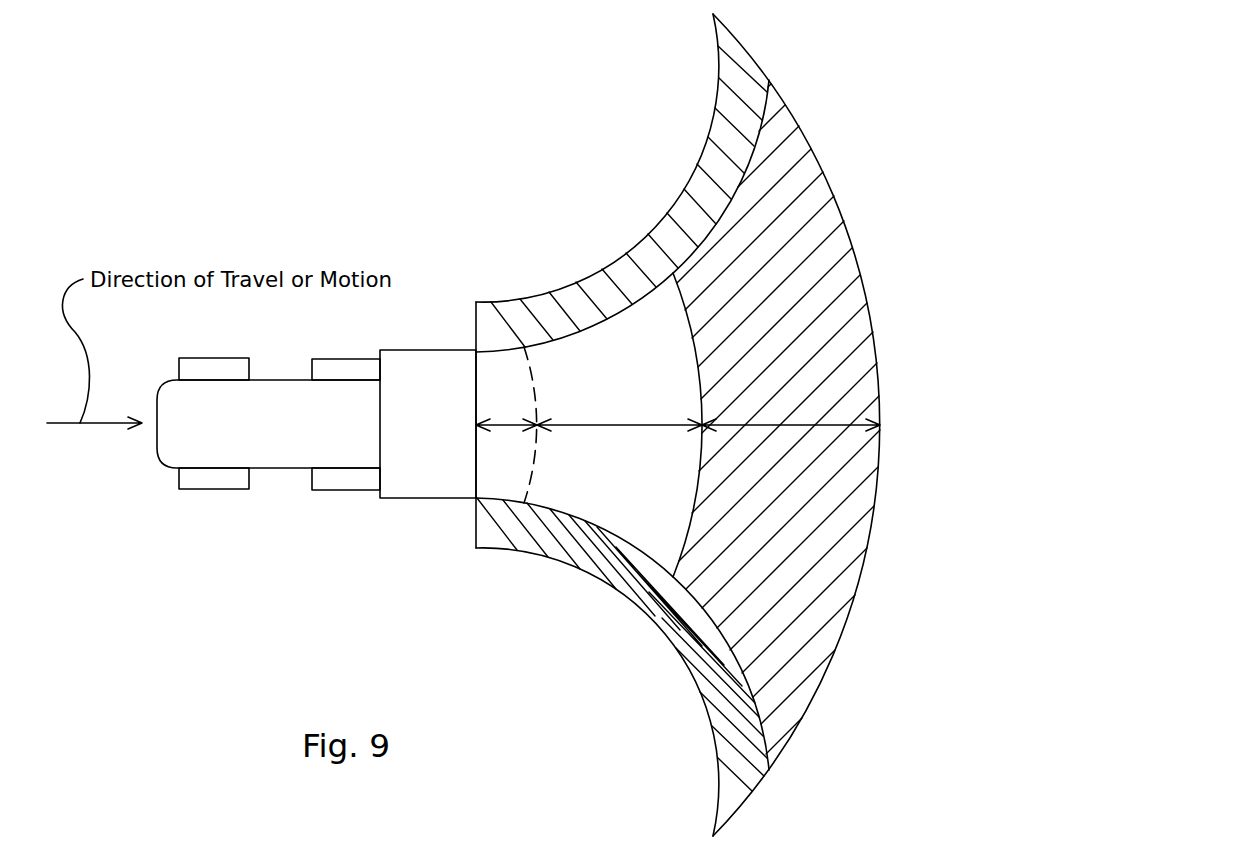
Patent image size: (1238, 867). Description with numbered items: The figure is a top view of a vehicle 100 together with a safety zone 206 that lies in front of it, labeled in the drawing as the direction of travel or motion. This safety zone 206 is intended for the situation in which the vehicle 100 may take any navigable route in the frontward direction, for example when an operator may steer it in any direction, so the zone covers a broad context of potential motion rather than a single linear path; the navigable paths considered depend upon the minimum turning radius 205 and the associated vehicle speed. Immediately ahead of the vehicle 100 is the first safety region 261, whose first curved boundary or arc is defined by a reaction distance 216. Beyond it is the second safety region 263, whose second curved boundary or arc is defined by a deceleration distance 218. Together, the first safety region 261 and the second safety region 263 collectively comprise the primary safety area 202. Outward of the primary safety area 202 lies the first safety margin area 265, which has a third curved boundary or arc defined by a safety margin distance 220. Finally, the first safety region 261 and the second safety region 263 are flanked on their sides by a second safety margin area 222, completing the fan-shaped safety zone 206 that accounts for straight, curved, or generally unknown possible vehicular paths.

The vehicle 100 is at (273, 450).
The first safety region 261 is at (493, 480).
The minimum turning radius 205 is at (473, 614).
The second safety region 263 is at (584, 491).
The primary safety area 202 is at (677, 497).
The first safety margin area 265 is at (844, 681).
The safety zone 206 is at (658, 425).
The reaction distance 216 is at (503, 422).
The deceleration distance 218 is at (656, 424).
The safety margin distance 220 is at (831, 430).
The second safety margin area 222 is at (643, 367).